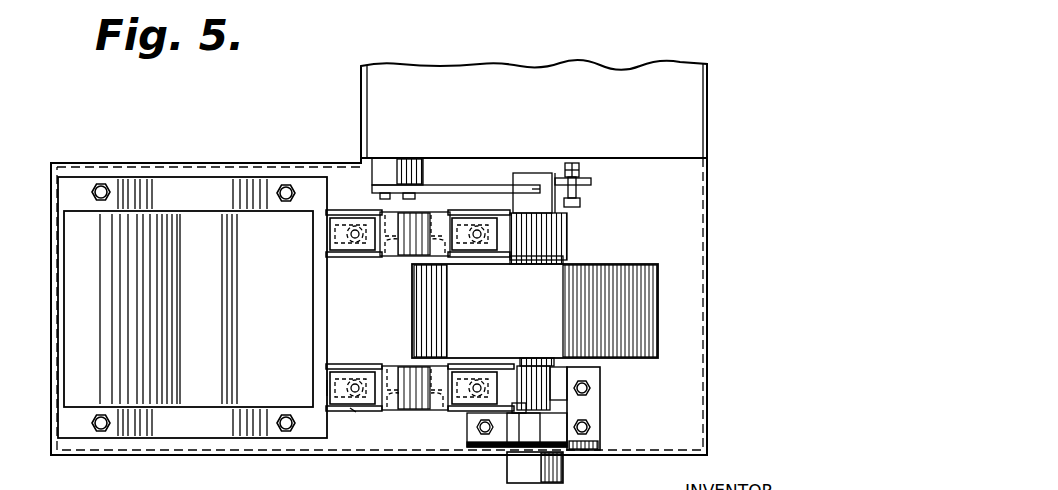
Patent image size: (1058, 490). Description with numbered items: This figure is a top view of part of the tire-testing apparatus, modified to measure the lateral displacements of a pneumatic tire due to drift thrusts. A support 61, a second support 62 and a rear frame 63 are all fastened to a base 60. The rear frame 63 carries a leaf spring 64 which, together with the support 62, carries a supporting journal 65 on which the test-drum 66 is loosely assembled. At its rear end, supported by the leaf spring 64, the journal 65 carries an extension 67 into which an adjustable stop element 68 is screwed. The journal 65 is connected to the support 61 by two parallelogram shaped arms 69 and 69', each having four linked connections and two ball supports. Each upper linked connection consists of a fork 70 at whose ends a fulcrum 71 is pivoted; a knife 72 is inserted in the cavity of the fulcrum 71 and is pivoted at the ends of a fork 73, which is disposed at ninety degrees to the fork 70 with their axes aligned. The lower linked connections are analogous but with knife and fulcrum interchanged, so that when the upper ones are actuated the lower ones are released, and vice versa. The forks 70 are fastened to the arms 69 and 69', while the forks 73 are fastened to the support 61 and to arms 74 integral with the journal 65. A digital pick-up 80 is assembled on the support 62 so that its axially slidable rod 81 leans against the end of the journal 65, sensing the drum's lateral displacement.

The base 60 is at (680, 402).
The support 61 is at (208, 393).
The support 62 is at (590, 412).
The rear frame 63 is at (690, 103).
The leaf spring 64 is at (440, 188).
The supporting journal 65 is at (531, 358).
The test-drum 66 is at (648, 302).
The extension 67 is at (595, 182).
The adjustable stop element 68 is at (568, 163).
The parallelogram shaped arm 69 is at (415, 405).
The parallelogram shaped arm 69' is at (400, 252).
The fork 70 is at (340, 259).
The fulcrum 71 is at (340, 386).
The knife 72 is at (350, 410).
The fork 73 is at (330, 232).
The arm 74 is at (531, 262).
The digital pick-up 80 is at (508, 468).
The rod 81 is at (552, 426).